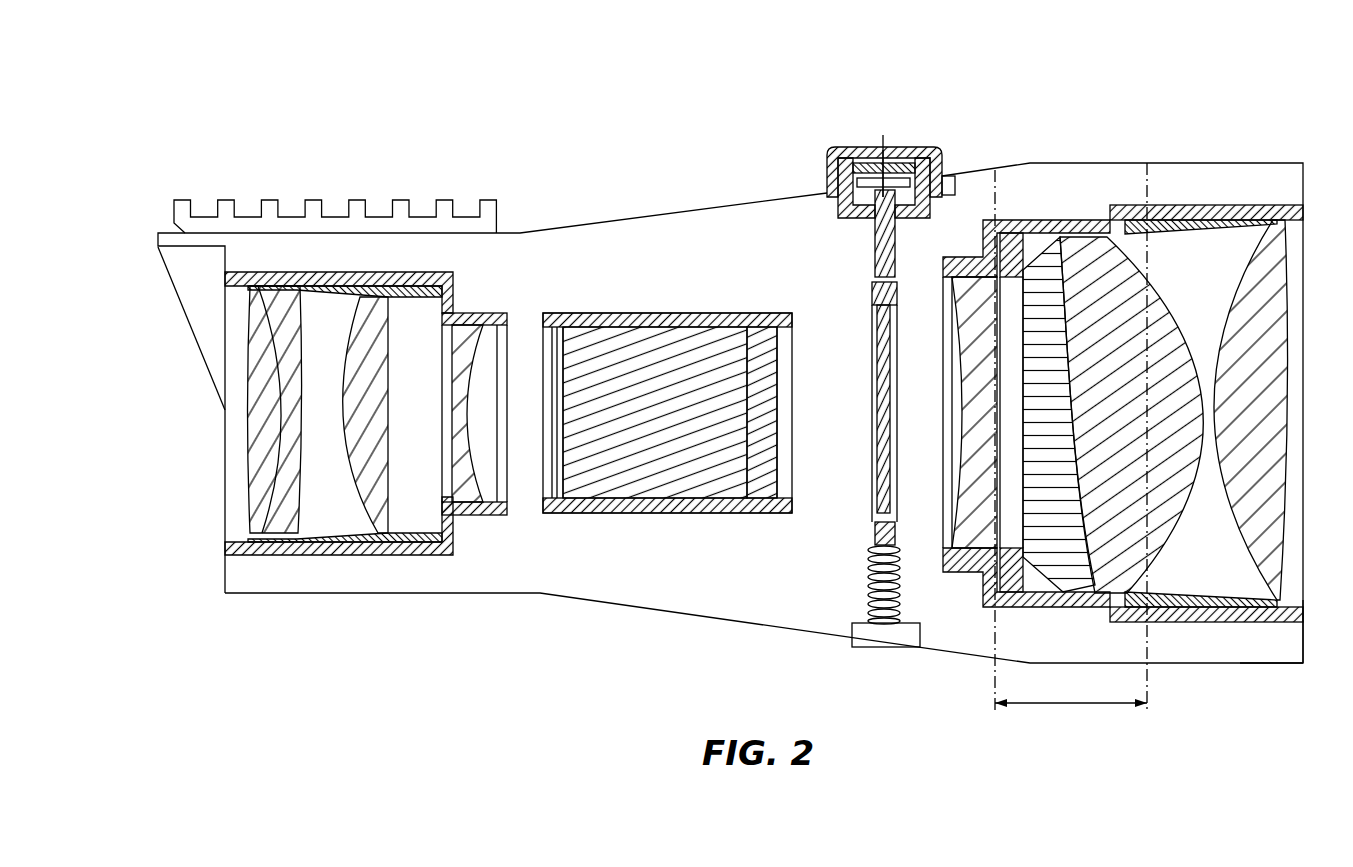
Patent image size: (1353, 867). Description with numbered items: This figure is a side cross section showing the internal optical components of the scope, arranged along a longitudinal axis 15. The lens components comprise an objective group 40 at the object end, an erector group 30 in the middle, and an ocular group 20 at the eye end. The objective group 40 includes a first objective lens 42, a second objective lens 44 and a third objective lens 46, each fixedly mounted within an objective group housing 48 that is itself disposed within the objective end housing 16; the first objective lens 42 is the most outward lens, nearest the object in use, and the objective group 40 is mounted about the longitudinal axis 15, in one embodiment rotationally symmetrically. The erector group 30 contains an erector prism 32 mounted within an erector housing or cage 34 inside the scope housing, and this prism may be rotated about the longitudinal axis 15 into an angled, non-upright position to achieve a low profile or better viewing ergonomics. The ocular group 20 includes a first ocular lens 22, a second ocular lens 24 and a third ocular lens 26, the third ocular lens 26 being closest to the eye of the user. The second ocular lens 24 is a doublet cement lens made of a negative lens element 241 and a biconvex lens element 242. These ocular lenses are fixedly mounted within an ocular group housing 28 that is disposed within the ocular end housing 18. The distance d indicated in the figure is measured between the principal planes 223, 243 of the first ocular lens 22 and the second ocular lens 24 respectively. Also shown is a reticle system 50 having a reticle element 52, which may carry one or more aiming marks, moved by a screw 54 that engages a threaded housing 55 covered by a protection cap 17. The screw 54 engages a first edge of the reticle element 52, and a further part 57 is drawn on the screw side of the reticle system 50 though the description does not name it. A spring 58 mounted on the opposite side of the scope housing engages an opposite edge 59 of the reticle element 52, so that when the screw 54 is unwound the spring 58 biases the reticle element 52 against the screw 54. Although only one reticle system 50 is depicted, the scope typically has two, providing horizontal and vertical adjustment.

The longitudinal axis 15 is at (165, 418).
The objective end housing 16 is at (251, 594).
The protection cap 17 is at (897, 148).
The ocular end housing 18 is at (1295, 664).
The ocular group 20 is at (1292, 42).
The first ocular lens 22 is at (963, 278).
The second ocular lens 24 is at (1113, 341).
The negative lens element 241 is at (1068, 255).
The biconvex lens element 242 is at (1133, 256).
The third ocular lens 26 is at (1265, 268).
The ocular group housing 28 is at (1259, 622).
The principal plane 223 is at (995, 688).
The principal plane 243 is at (1147, 693).
The erector group 30 is at (767, 72).
The erector prism 32 is at (646, 490).
The erector housing or cage 34 is at (740, 508).
The objective group 40 is at (507, 72).
The first objective lens 42 is at (271, 284).
The second objective lens 44 is at (374, 293).
The third objective lens 46 is at (474, 318).
The objective group housing 48 is at (395, 556).
The reticle system 50 is at (937, 72).
The reticle element 52 is at (875, 373).
The screw 54 is at (875, 248).
The threaded housing 55 is at (830, 210).
The nut 57 is at (872, 291).
The spring 58 is at (868, 597).
The opposite edge 59 is at (872, 534).